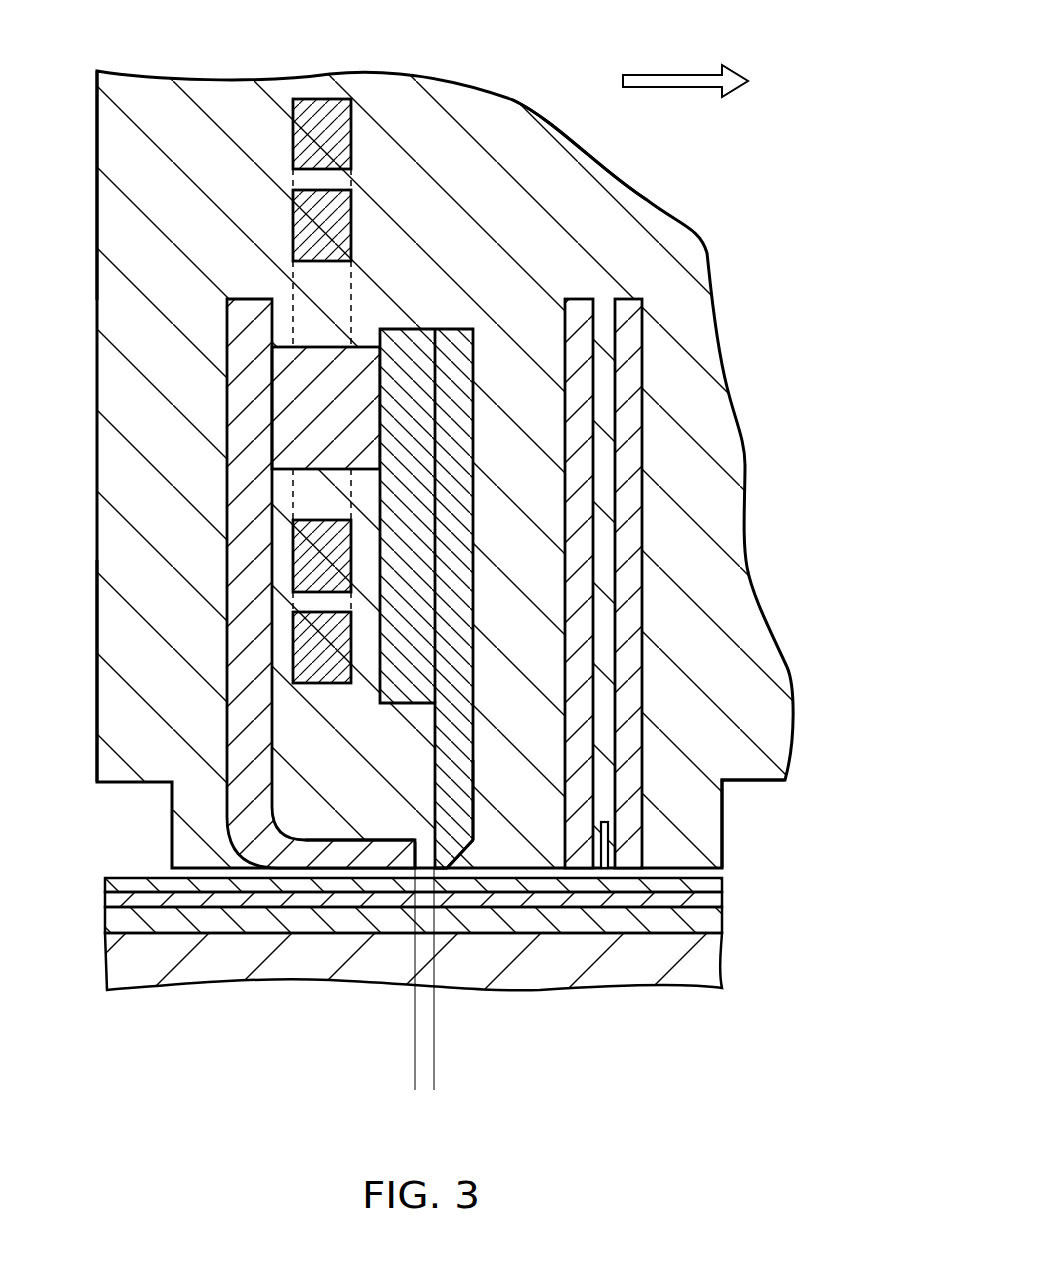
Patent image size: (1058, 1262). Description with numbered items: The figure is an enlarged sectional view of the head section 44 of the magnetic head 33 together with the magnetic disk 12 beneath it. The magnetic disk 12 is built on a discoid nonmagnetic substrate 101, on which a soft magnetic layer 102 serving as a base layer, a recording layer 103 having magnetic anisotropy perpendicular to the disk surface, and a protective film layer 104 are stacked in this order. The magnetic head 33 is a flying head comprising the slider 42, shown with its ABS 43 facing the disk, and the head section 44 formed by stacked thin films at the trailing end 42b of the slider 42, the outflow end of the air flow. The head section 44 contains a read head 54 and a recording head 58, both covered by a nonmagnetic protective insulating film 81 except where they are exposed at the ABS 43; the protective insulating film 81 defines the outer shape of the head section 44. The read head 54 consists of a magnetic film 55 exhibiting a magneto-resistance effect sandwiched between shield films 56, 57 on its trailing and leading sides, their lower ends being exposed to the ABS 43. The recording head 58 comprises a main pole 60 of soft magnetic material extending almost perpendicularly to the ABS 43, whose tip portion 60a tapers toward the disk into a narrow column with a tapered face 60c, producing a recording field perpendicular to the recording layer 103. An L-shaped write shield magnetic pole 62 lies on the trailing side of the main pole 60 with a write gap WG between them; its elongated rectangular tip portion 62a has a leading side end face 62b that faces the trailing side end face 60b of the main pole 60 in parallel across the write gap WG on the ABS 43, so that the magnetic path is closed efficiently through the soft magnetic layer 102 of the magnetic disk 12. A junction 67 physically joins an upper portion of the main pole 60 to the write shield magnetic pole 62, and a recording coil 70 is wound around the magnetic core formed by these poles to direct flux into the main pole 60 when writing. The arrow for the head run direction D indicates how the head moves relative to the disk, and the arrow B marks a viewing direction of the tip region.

The magnetic head 33 is at (435, 535).
The magnetic disk 12 is at (438, 961).
The slider 42 is at (700, 278).
The trailing end 42b is at (97, 700).
The ABS 43 is at (770, 783).
The head section 44 is at (573, 160).
The read head 54 is at (674, 557).
The magnetic film 55 is at (605, 832).
The shield film 56 is at (628, 625).
The shield film 57 is at (578, 590).
The recording head 58 is at (245, 341).
The main pole 60 is at (612, 697).
The tip portion 60a is at (449, 840).
The trailing side end face 60b is at (440, 867).
The tapered side face of main pole 60c is at (465, 848).
The write shield magnetic pole 62 is at (232, 662).
The tip portion 62a is at (317, 862).
The leading side end face 62b is at (398, 855).
The junction 67 is at (280, 392).
The recording coil 70 is at (293, 137).
The protective insulating film 81 is at (97, 95).
The substrate 101 is at (718, 960).
The soft magnetic layer 102 is at (716, 920).
The recording layer 103 is at (722, 893).
The protective film layer 104 is at (725, 883).
The write gap WG is at (473, 1079).
The direction B is at (529, 1060).
The head run direction D is at (685, 64).